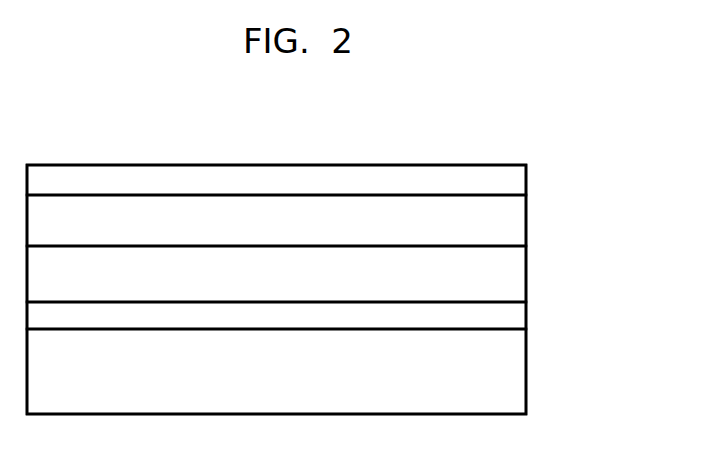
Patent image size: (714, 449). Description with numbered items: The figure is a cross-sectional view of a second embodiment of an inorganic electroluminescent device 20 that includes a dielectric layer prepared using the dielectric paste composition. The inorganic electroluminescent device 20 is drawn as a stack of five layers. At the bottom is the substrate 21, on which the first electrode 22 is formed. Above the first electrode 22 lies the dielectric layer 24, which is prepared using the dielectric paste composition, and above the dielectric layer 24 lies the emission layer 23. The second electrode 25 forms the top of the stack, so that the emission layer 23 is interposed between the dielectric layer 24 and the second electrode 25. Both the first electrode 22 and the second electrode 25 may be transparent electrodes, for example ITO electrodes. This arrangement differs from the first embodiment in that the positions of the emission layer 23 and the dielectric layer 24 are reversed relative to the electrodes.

The inorganic electroluminescent device 20 is at (519, 146).
The substrate 21 is at (526, 373).
The first electrode 22 is at (526, 316).
The emission layer 23 is at (526, 222).
The dielectric layer 24 is at (526, 273).
The second electrode 25 is at (526, 181).